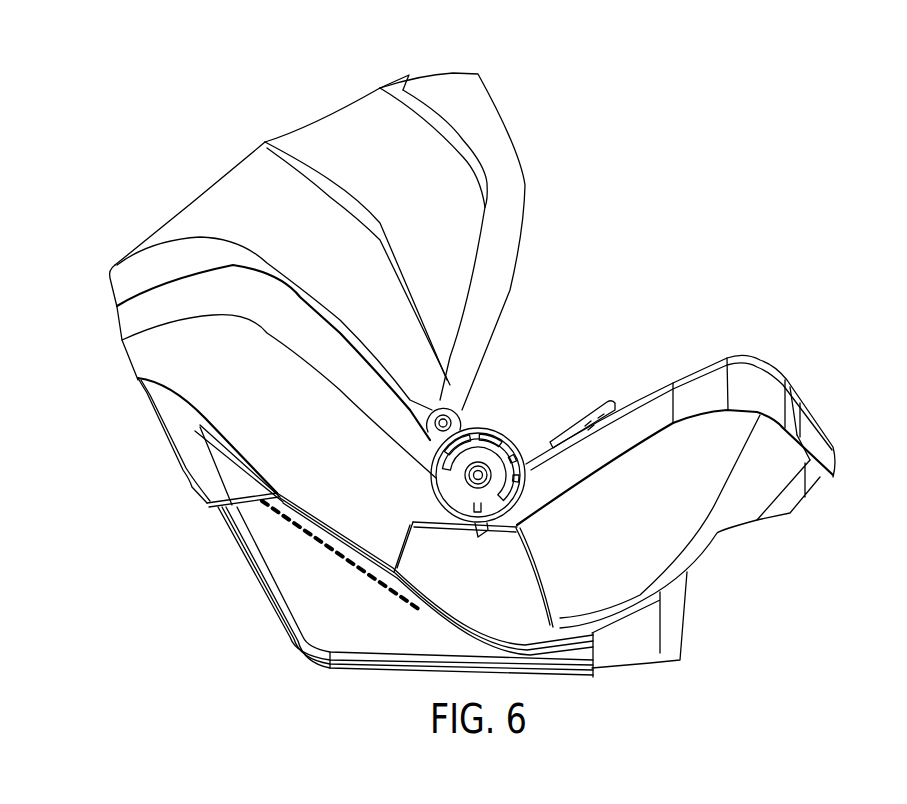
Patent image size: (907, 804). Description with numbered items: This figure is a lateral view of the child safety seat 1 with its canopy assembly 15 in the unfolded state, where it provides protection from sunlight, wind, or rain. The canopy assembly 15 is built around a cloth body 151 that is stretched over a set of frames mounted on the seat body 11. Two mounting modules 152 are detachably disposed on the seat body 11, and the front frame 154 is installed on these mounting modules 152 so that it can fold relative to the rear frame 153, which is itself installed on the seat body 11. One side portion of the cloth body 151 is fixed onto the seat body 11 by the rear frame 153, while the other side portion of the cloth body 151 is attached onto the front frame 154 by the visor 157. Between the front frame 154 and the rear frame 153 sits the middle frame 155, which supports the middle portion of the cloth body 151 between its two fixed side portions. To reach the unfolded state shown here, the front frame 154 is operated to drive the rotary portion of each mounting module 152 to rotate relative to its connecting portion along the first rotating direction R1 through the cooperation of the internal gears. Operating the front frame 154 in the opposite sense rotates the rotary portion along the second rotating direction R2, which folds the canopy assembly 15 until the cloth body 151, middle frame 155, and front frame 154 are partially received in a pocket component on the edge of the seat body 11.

The child safety seat 1 is at (808, 123).
The seat body 11 is at (715, 532).
The canopy assembly 15 is at (667, 207).
The cloth body 151 is at (366, 150).
The mounting module 152 is at (458, 427).
The rear frame 153 is at (133, 283).
The front frame 154 is at (498, 238).
The middle frame 155 is at (275, 153).
The visor 157 is at (407, 93).
The first rotating direction R1 is at (642, 138).
The second rotating direction R2 is at (622, 167).